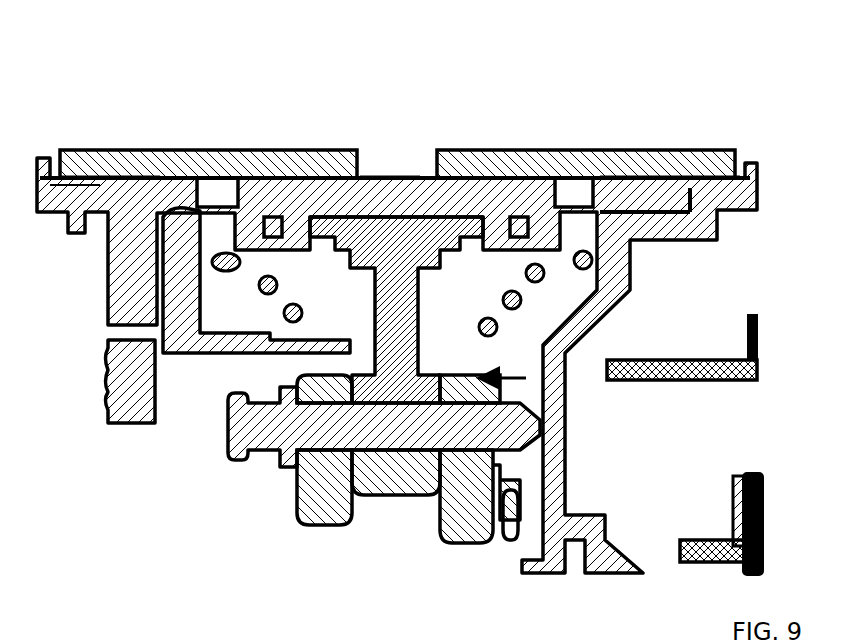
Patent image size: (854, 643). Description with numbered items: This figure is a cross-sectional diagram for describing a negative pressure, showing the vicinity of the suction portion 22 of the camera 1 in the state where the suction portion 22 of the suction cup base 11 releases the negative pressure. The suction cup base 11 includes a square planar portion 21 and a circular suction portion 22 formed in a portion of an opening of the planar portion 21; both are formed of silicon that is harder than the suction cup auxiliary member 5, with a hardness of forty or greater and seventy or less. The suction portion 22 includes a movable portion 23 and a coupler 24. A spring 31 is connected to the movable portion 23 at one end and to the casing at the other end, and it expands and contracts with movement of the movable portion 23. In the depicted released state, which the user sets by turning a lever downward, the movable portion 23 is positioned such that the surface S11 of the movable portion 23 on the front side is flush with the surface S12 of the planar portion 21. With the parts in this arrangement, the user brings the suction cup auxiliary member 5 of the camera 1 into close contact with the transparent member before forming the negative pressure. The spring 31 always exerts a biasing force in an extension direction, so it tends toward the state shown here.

The camera 1 is at (482, 44).
The suction cup auxiliary member 5 is at (300, 150).
The suction cup base 11 is at (182, 443).
The planar portion 21 is at (153, 193).
The suction portion 22 is at (400, 220).
The movable portion 23 is at (393, 177).
The coupler 24 is at (218, 212).
The spring 31 is at (520, 306).
The surface of movable portion on the front side S11 is at (382, 177).
The surface of planar portion S12 is at (117, 177).